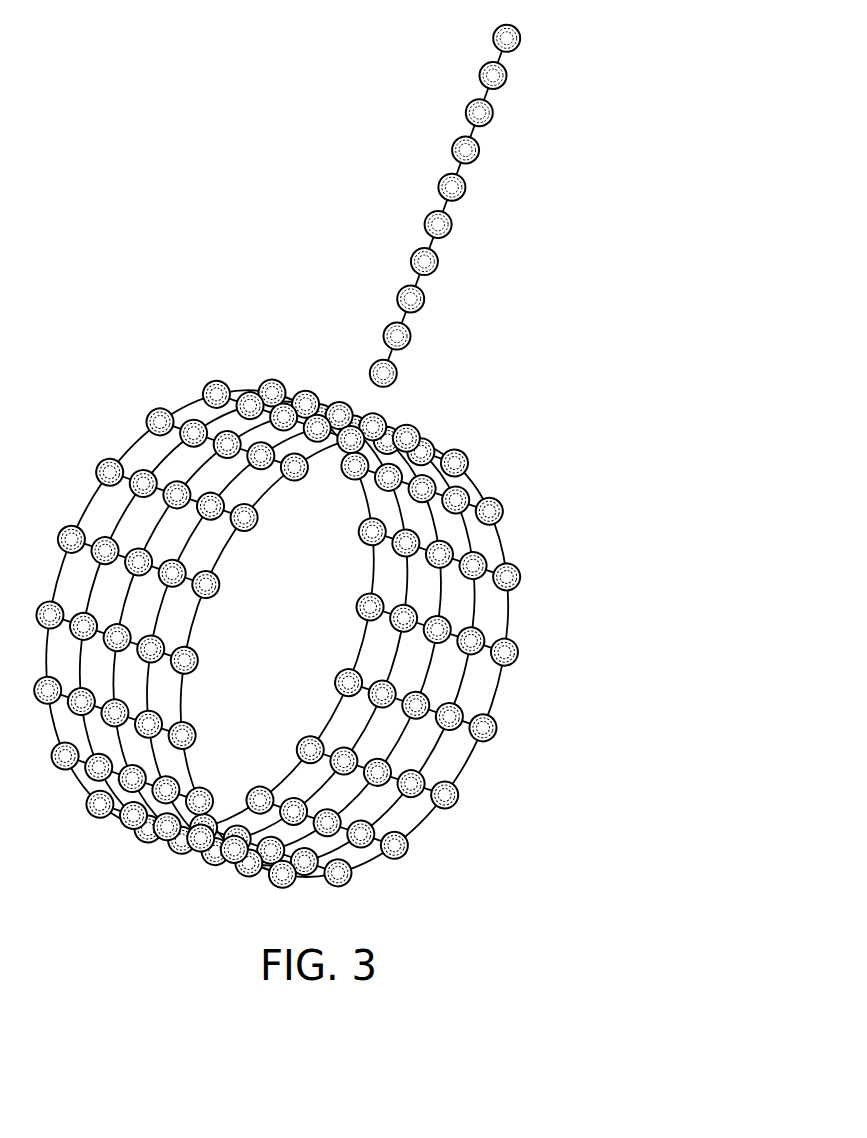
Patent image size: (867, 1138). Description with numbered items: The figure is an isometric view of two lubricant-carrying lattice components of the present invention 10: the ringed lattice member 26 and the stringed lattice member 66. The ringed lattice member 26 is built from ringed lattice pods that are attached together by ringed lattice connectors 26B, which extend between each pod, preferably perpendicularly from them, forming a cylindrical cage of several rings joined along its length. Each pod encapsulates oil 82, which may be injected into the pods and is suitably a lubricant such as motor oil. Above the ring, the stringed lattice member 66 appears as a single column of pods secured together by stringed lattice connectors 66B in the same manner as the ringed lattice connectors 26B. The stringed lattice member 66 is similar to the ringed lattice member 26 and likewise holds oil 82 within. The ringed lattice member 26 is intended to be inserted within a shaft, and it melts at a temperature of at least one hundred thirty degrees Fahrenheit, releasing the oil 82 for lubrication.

The present invention 10 is at (134, 96).
The ringed lattice member 26 is at (293, 507).
The ringed lattice connectors 26B is at (132, 440).
The stringed lattice member 66 is at (459, 206).
The stringed lattice connectors 66B is at (420, 282).
The oil 82 is at (517, 655).